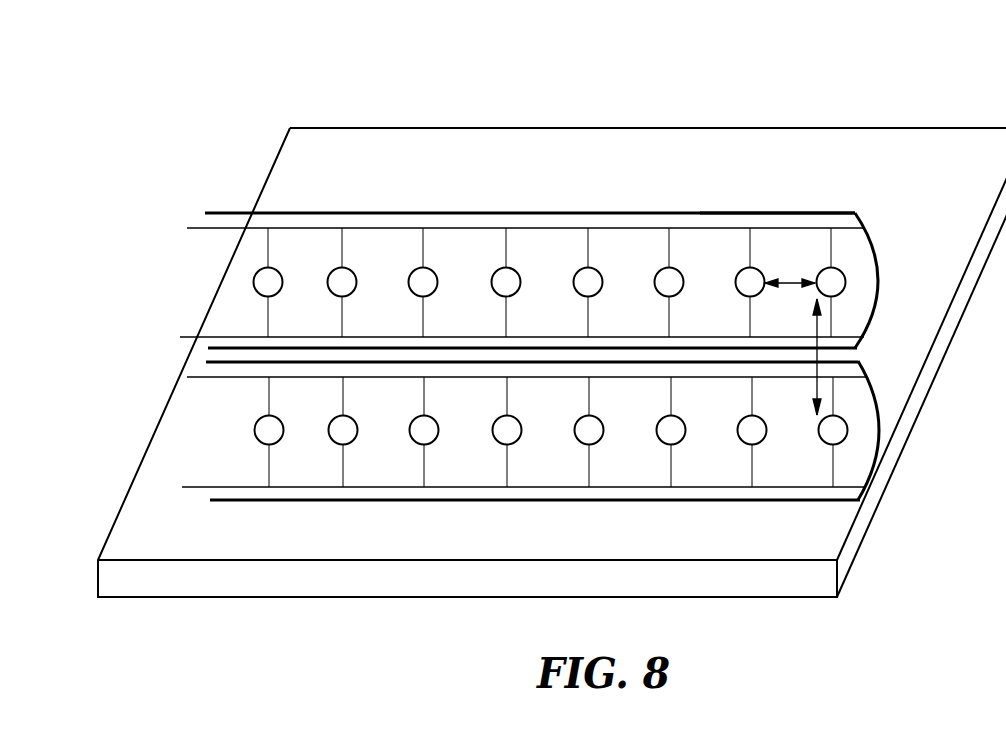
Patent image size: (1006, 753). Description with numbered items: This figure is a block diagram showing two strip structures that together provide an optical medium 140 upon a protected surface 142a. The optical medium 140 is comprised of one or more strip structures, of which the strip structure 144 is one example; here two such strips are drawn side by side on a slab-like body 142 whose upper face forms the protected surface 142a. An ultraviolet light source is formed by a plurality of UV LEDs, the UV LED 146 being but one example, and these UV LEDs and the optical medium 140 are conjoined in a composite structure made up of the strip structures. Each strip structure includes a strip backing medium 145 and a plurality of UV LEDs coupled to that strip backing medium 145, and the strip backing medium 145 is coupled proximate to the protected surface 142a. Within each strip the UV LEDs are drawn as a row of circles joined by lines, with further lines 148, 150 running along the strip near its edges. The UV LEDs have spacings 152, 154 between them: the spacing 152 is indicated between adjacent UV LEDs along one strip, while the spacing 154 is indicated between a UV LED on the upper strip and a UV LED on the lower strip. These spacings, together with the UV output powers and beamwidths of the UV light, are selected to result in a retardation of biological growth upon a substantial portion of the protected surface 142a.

The optical medium 140 is at (487, 213).
The substrate panel 142 is at (607, 127).
The protected surface 142a is at (972, 173).
The strip structure 144 is at (378, 213).
The strip backing medium 145 is at (780, 212).
The UV LED 146 is at (604, 282).
The inner line 148 is at (608, 228).
The inner line 150 is at (695, 337).
The spacing 152 is at (790, 275).
The spacing 154 is at (818, 325).